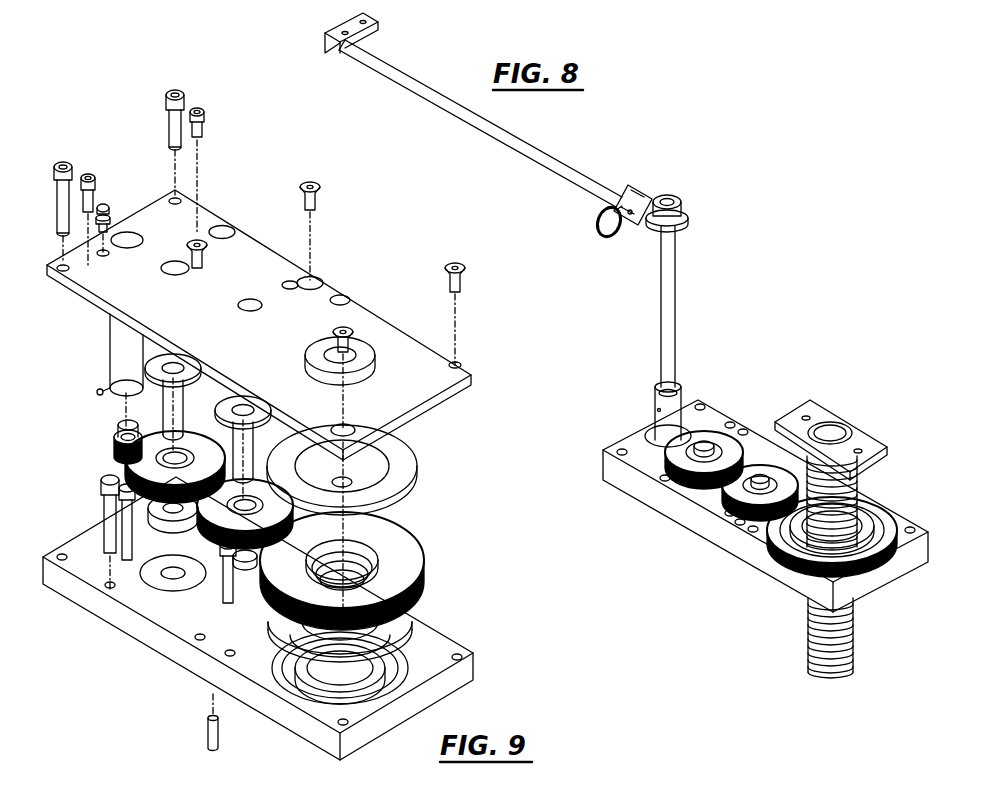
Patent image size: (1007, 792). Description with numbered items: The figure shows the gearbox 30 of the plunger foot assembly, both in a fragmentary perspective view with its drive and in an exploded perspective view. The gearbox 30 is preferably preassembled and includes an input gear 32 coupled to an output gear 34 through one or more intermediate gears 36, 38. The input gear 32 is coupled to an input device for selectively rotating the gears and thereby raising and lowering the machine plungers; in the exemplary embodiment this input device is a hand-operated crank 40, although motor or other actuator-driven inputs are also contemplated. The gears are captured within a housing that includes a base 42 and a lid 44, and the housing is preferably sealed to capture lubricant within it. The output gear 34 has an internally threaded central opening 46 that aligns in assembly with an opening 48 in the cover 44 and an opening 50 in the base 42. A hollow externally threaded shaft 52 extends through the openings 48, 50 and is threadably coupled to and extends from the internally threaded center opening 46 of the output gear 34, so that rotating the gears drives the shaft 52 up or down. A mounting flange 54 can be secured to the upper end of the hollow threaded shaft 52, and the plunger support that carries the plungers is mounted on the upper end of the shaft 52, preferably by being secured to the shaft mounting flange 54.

In FIG. 9, the gearbox 30 is at (258, 617).
In FIG. 8, the gearbox 30 is at (765, 506).
In FIG. 9, the input gear 32 is at (112, 437).
In FIG. 8, the input gear 32 is at (652, 443).
In FIG. 9, the output gear 34 is at (381, 569).
In FIG. 8, the output gear 34 is at (875, 514).
In FIG. 9, the intermediate gear 36 is at (130, 458).
In FIG. 8, the intermediate gear 36 is at (713, 432).
In FIG. 9, the intermediate gear 38 is at (225, 522).
In FIG. 8, the intermediate gear 38 is at (760, 471).
In FIG. 8, the hand-operated crank 40 is at (567, 168).
In FIG. 9, the base 42 is at (183, 658).
In FIG. 8, the base 42 is at (768, 568).
In FIG. 9, the lid 44 is at (331, 290).
In FIG. 9, the internally threaded central opening 46 is at (350, 546).
In FIG. 9, the opening 48 is at (358, 354).
In FIG. 9, the opening 50 is at (318, 690).
In FIG. 8, the hollow externally threaded shaft 52 is at (852, 632).
In FIG. 8, the mounting flange 54 is at (868, 443).